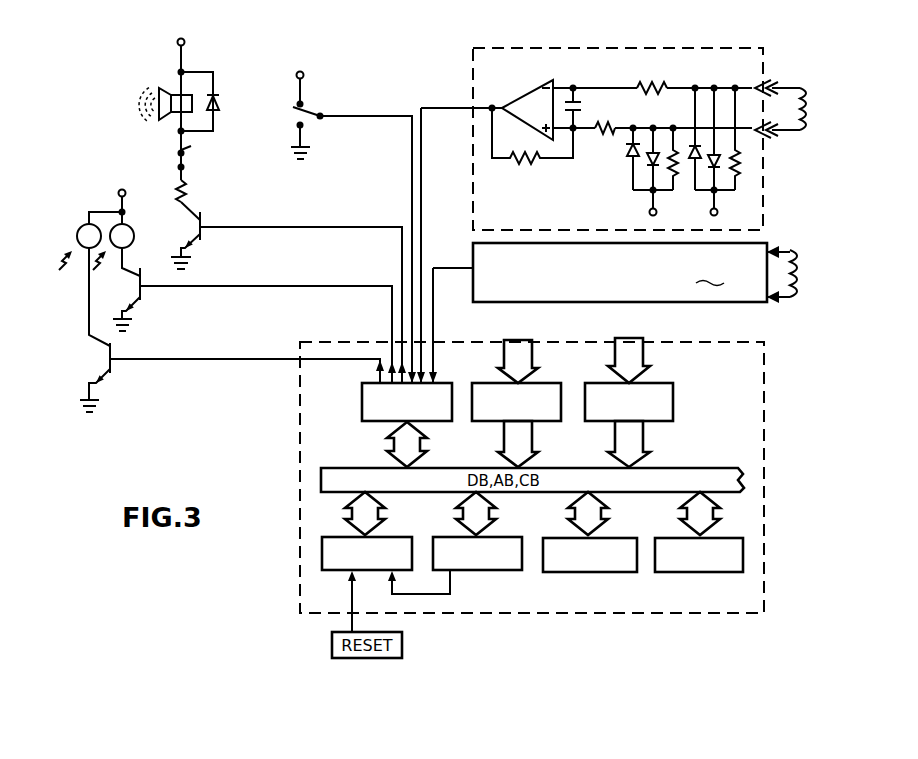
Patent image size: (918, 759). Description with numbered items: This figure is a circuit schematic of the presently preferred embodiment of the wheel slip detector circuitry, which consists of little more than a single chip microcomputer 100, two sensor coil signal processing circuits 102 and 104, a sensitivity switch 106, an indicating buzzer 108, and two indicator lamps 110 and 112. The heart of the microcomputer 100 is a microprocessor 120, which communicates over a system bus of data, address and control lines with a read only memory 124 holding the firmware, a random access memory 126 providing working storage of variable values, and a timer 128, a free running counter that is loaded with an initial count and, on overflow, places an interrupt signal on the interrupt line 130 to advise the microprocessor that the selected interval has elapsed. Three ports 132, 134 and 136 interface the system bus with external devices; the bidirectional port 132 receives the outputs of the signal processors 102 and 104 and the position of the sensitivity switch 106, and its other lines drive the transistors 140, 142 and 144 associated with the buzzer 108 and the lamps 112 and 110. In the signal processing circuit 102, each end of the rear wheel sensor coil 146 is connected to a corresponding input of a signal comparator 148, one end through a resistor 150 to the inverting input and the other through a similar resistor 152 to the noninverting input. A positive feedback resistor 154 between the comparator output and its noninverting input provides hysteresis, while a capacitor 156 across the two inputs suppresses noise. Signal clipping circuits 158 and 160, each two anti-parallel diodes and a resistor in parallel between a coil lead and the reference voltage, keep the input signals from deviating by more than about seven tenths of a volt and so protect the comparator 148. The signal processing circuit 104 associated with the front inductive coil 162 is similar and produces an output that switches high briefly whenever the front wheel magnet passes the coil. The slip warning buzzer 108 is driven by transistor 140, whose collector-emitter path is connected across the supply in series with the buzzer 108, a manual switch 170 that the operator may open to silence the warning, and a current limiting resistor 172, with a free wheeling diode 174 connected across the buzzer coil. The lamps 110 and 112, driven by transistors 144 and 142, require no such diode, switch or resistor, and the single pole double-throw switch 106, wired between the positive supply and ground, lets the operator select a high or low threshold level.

The single chip microcomputer 100 is at (768, 378).
The sensor coil signal processing circuit 102 is at (732, 79).
The sensor coil signal processing circuit 104 is at (620, 272).
The sensitivity switch 106 is at (313, 99).
The indicating buzzer 108 is at (146, 62).
The indicator lamp 110 is at (84, 224).
The indicator lamp 112 is at (135, 222).
The microprocessor 120 is at (338, 557).
The read only memory (ROM) 124 is at (585, 568).
The random access memory (RAM) 126 is at (680, 568).
The timer 128 is at (490, 568).
The interrupt line 130 is at (432, 597).
The port 132 is at (437, 409).
The port 134 is at (549, 409).
The port 136 is at (662, 410).
The driver transistor 140 is at (206, 236).
The driving transistor 142 is at (146, 298).
The driving transistor 144 is at (114, 368).
The sensor coil 146 is at (806, 88).
The signal comparator circuit 148 is at (531, 101).
The resistor 150 is at (639, 71).
The resistor 152 is at (612, 108).
The positive feedback resistor 154 is at (520, 166).
The capacitor 156 is at (588, 110).
The signal clipping circuit 158 is at (622, 178).
The signal clipping circuit 160 is at (748, 178).
The front inductive coil 162 is at (803, 297).
The manual switch 170 is at (186, 155).
The current limiting resistor 172 is at (187, 192).
The free wheeling diode 174 is at (218, 104).